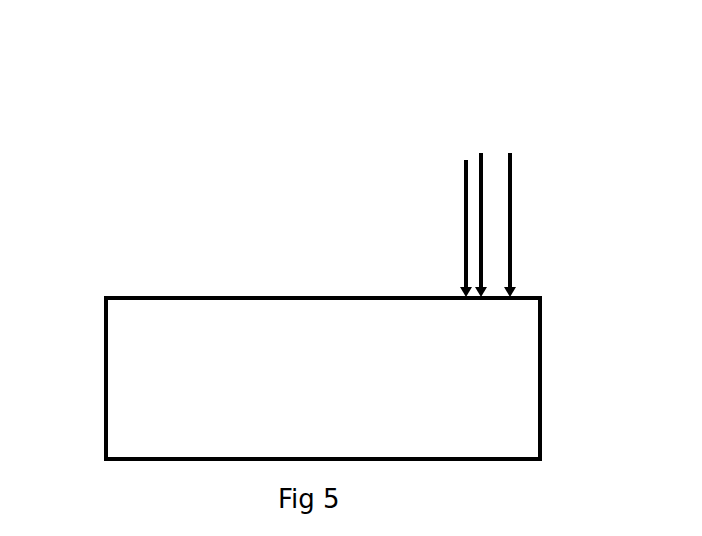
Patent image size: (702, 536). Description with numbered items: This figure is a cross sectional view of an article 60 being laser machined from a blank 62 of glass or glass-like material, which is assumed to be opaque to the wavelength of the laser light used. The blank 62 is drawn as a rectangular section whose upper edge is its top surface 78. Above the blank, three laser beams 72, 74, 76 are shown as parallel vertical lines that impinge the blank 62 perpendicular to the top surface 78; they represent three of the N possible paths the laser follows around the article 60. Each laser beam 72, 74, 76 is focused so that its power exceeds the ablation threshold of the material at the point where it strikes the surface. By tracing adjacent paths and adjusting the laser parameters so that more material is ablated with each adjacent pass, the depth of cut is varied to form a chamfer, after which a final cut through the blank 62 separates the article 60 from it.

The article 60 is at (323, 378).
The blank 62 is at (106, 328).
The top surface 78 is at (343, 295).
The laser beam 72 is at (466, 208).
The laser beam 74 is at (481, 186).
The laser beam 76 is at (510, 188).